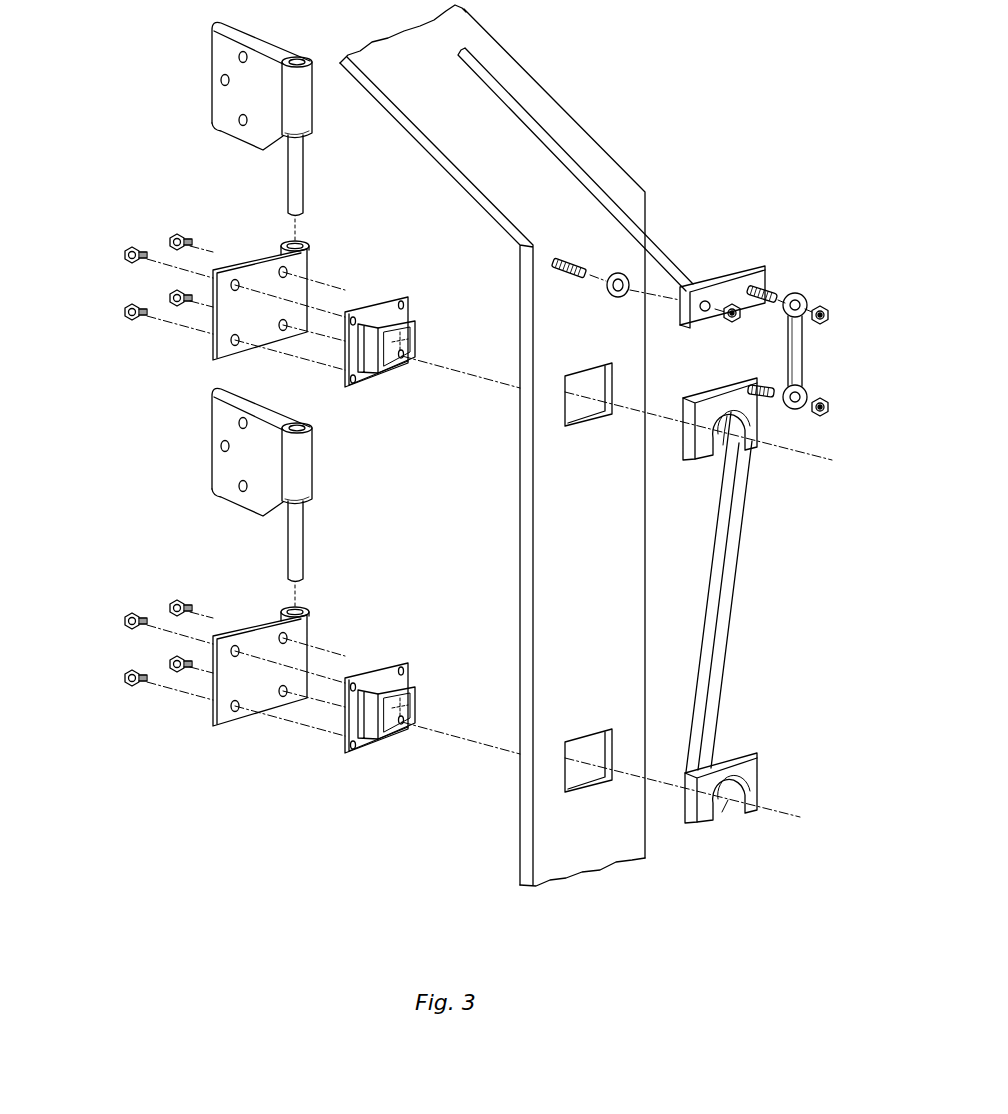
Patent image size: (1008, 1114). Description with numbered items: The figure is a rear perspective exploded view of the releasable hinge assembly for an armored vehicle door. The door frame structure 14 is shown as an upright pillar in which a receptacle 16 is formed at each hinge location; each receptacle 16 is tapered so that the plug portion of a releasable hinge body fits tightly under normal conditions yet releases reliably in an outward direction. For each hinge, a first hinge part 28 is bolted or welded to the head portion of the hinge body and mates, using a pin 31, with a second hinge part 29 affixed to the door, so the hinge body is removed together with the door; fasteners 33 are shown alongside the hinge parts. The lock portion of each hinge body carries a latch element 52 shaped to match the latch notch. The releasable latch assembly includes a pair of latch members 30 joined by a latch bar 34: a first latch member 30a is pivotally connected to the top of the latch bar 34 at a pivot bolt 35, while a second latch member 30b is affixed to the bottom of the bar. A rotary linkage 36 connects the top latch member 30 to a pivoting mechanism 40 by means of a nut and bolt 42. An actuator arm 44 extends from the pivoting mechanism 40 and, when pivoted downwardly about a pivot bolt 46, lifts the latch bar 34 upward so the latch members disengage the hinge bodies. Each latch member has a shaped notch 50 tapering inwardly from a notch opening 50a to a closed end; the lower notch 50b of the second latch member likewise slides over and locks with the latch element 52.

The door frame structure 14 is at (546, 90).
The receptacle 16 is at (598, 376).
The first hinge part 28 is at (210, 78).
The second hinge part 29 is at (221, 452).
The latch member 30 is at (740, 600).
The first latch member 30a is at (700, 441).
The second latch member 30b is at (752, 790).
The pin 31 is at (297, 173).
The fasteners 33 is at (118, 254).
The latch bar 34 is at (735, 598).
The pivot bolt 35 is at (768, 383).
The rotary linkage 36 is at (802, 364).
The pivoting mechanism 40 is at (755, 265).
The nut and bolt 42 is at (773, 292).
The actuator arm 44 is at (660, 238).
The pivot bolt 46 is at (551, 268).
The shaped notch 50 is at (728, 425).
The notch opening 50a is at (723, 447).
The lower notch 50b is at (722, 813).
The latch element 52 is at (402, 337).